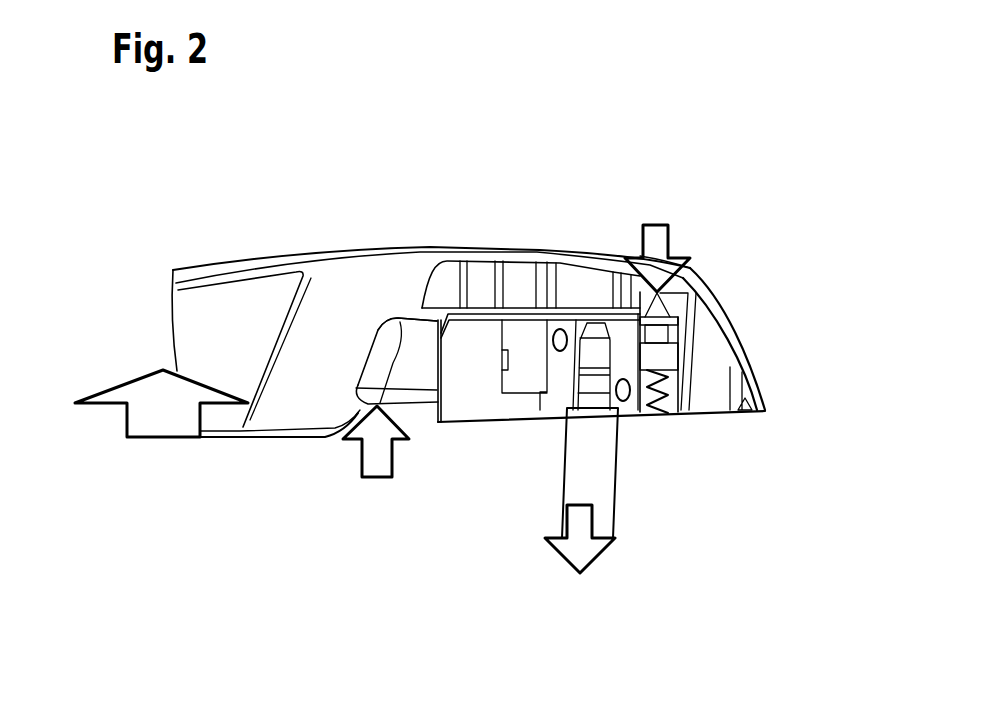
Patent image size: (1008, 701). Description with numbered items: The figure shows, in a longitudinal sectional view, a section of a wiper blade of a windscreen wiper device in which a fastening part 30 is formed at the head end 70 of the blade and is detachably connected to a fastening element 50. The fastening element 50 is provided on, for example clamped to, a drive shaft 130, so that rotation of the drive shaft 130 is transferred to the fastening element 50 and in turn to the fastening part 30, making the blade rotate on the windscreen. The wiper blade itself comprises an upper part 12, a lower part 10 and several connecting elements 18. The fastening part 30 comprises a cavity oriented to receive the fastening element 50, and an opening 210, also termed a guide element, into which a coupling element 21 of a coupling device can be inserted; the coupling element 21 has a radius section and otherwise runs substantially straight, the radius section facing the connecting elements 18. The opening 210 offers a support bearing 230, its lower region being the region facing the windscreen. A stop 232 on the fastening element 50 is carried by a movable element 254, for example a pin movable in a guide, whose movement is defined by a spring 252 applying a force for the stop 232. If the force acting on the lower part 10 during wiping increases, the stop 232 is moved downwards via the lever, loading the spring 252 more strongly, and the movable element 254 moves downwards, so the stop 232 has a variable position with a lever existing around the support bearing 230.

The lower part 10 is at (213, 435).
The upper part 12 is at (227, 273).
The connecting elements 18 is at (257, 392).
The coupling element 21 is at (358, 344).
The opening 210 is at (388, 314).
The support bearing 230 is at (363, 409).
The fastening part 30 is at (540, 262).
The fastening element 50 is at (478, 404).
The head end 70 is at (713, 263).
The drive shaft 130 is at (605, 495).
The stop 232 is at (657, 300).
The movable element 254 is at (663, 358).
The spring 252 is at (658, 415).